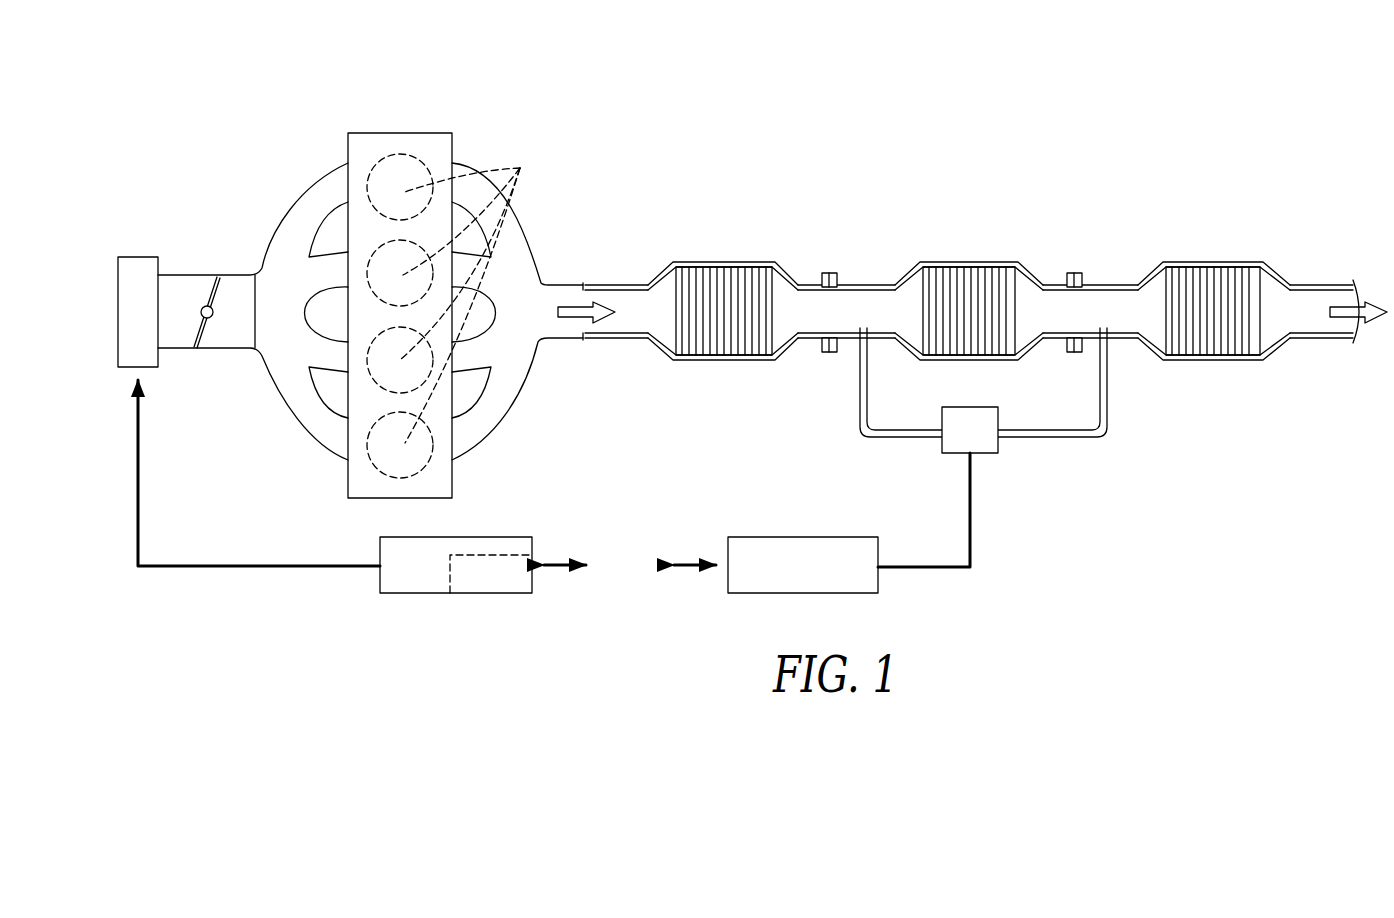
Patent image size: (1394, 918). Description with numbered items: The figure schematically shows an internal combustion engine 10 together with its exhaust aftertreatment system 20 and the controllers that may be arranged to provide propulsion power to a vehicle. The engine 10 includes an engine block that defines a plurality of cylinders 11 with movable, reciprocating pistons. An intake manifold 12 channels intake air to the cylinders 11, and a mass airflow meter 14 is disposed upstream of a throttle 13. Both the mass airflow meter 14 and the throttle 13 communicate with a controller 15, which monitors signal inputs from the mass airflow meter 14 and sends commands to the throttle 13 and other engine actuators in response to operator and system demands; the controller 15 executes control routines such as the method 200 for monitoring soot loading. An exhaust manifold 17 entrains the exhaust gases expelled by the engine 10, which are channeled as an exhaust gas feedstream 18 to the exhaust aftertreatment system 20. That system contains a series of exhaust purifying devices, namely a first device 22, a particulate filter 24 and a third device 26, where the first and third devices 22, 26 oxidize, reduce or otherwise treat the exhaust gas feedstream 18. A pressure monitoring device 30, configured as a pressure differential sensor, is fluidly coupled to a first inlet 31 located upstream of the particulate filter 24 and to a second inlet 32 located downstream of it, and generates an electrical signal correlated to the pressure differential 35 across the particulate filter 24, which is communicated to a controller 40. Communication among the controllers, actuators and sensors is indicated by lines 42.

The internal combustion engine 10 is at (372, 127).
The cylinders 11 is at (459, 316).
The intake manifold 12 is at (292, 213).
The throttle 13 is at (205, 304).
The mass airflow meter 14 is at (138, 256).
The controller 15 is at (441, 597).
The exhaust manifold 17 is at (515, 214).
The exhaust gas feedstream 18 is at (575, 311).
The exhaust aftertreatment system 20 is at (838, 242).
The first device 22 is at (723, 296).
The particulate filter 24 is at (970, 300).
The third device 26 is at (1213, 295).
The pressure monitoring device 30 is at (980, 438).
The first inlet 31 is at (858, 341).
The second inlet 32 is at (1110, 342).
The pressure differential 35 is at (973, 545).
The controller 40 is at (803, 565).
The lines 42 is at (560, 569).
The method 200 is at (491, 574).